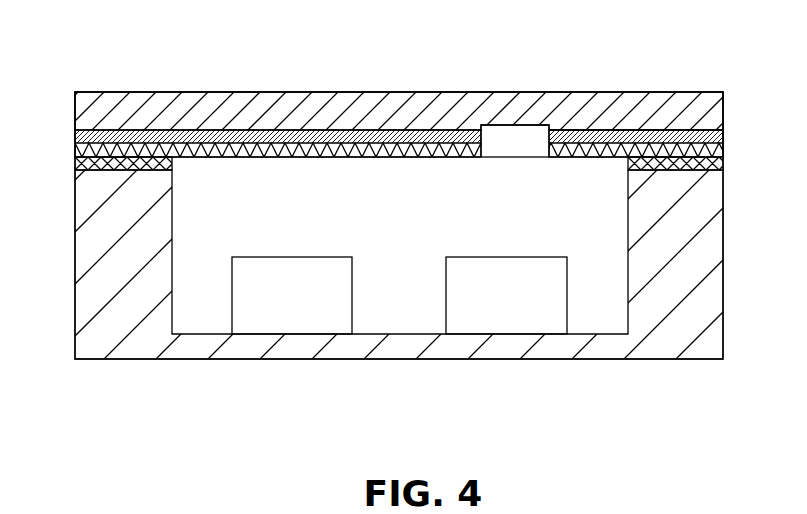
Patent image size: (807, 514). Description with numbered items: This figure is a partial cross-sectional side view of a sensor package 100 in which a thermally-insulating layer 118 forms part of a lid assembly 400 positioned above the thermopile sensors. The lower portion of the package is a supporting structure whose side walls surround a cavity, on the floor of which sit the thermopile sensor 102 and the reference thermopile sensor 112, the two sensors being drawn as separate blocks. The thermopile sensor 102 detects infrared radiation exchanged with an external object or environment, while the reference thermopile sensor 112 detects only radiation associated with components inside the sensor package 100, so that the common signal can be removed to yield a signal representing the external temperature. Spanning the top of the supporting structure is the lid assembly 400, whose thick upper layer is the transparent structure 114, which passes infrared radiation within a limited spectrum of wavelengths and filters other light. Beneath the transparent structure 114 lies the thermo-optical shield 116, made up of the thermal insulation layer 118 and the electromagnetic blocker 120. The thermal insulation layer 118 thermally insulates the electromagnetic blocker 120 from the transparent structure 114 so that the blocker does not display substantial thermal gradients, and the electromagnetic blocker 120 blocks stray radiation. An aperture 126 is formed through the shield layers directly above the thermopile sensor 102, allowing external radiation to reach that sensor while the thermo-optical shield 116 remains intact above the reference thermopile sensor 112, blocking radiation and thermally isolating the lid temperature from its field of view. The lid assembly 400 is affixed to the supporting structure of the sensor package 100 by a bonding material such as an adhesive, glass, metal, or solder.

The sensor package 100 is at (159, 43).
The thermopile sensor 102 is at (533, 320).
The reference thermopile sensor 112 is at (288, 320).
The transparent structure 114 is at (322, 105).
The thermo-optical shield 116 is at (729, 130).
The thermal insulation layer 118 is at (643, 127).
The electromagnetic blocker 120 is at (707, 165).
The aperture 126 is at (512, 143).
The lid assembly 400 is at (68, 92).